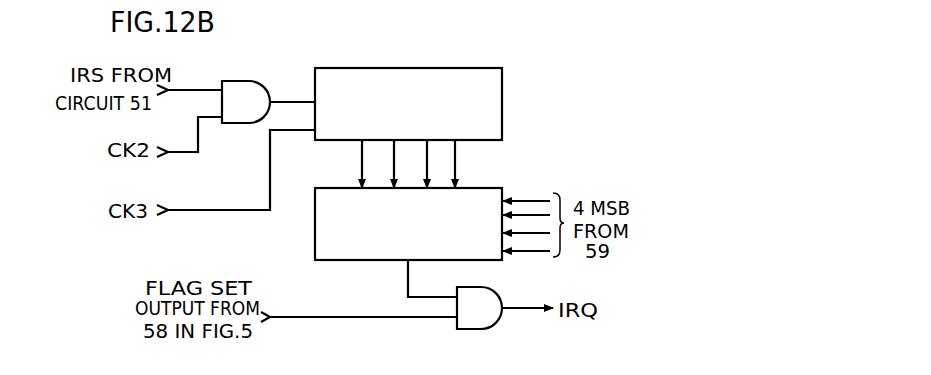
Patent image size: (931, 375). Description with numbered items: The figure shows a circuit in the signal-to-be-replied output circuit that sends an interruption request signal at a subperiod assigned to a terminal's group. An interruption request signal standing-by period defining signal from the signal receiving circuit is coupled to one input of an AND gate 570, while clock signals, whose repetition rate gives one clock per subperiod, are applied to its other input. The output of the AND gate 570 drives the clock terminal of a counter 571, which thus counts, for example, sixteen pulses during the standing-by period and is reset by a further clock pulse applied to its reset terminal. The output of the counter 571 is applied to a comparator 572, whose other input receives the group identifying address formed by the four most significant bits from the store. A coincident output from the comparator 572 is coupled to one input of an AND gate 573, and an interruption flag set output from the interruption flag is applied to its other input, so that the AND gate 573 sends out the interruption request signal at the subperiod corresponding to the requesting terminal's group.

The AND gate 570 is at (247, 84).
The counter 571 is at (490, 75).
The comparator 572 is at (478, 187).
The AND gate 573 is at (485, 322).